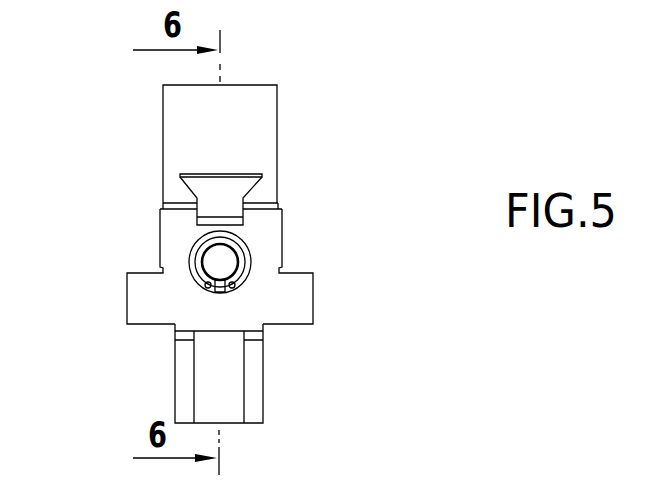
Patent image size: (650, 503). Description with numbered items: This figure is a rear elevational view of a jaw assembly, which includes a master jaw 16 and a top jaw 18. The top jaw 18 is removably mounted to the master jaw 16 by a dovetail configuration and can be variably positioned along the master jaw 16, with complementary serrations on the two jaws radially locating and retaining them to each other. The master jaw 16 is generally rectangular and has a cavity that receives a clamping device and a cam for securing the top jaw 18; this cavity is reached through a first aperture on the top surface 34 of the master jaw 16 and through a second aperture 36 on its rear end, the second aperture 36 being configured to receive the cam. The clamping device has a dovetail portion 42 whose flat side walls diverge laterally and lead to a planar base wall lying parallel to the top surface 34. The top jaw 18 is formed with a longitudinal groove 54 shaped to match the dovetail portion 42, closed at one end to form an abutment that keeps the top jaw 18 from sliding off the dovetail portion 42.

The master jaw 16 is at (297, 303).
The top jaw 18 is at (258, 105).
The top surface 34 is at (160, 218).
The second aperture 36 is at (192, 272).
The dovetail portion 42 is at (237, 187).
The groove 54 is at (207, 173).